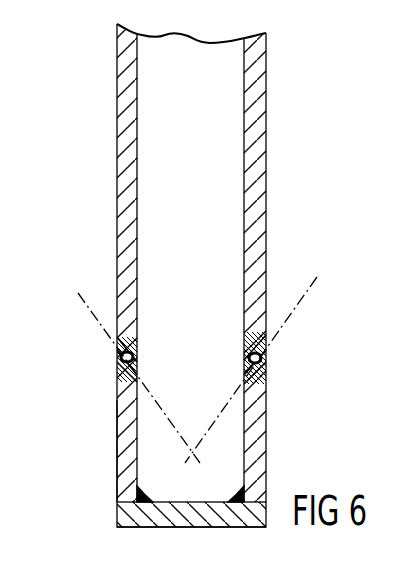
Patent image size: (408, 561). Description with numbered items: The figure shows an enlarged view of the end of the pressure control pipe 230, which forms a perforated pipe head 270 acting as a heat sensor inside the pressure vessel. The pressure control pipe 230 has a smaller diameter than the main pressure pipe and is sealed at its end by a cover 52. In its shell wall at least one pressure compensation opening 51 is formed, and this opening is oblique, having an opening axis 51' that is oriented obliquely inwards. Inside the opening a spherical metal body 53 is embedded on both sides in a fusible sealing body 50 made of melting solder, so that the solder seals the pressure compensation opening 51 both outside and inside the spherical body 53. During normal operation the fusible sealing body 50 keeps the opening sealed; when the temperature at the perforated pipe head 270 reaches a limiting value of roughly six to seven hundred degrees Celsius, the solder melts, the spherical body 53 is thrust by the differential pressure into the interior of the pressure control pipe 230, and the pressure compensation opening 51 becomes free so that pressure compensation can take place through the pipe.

The pressure control pipe 230 is at (266, 180).
The perforated pipe head 270 is at (113, 426).
The cover 52 is at (117, 508).
The fusible sealing body 50 is at (127, 372).
The spherical metal body 53 is at (266, 363).
The pressure compensation opening 51 is at (210, 378).
The opening axis 51' is at (252, 349).